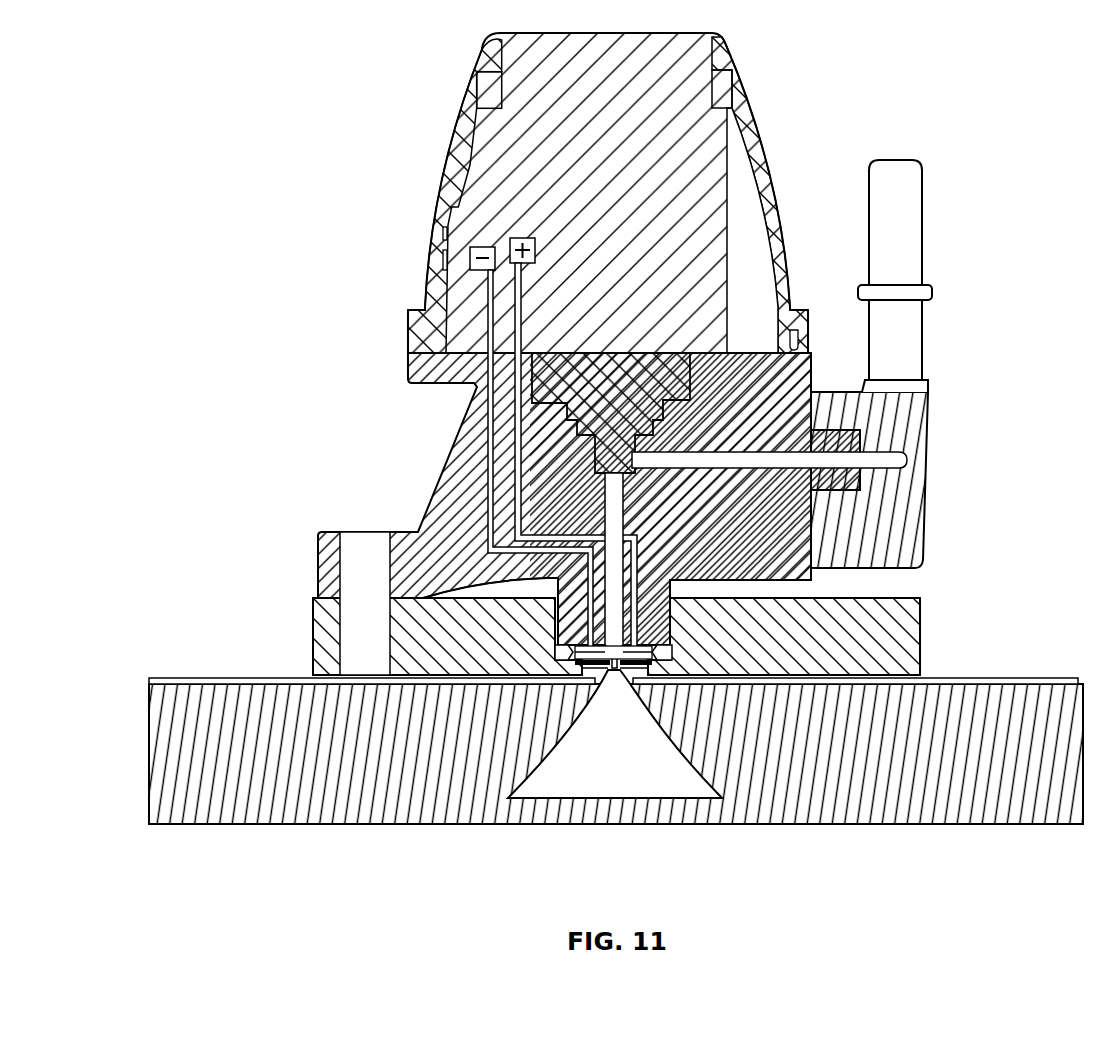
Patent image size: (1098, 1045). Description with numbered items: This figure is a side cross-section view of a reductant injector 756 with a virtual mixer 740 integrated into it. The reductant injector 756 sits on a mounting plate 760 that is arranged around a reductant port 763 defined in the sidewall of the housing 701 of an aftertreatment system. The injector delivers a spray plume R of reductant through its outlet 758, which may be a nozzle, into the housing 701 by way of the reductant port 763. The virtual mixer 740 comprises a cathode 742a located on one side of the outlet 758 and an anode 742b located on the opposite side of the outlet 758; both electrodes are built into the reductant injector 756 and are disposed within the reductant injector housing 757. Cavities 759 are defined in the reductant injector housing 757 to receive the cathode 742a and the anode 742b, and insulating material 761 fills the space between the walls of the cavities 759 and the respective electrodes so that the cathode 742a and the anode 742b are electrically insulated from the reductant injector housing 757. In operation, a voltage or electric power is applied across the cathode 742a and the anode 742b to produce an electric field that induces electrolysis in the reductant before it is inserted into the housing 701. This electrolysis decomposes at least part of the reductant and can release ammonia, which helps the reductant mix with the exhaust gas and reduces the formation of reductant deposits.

The reductant injector 756 is at (728, 63).
The reductant injector housing 757 is at (473, 464).
The virtual mixer 740 is at (487, 532).
The cathode 742a is at (600, 650).
The anode 742b is at (665, 660).
The insulating material 761 is at (655, 648).
The cavities 759 is at (640, 657).
The mounting plate 760 is at (800, 650).
The housing 701 is at (1018, 683).
The reductant port 763 is at (600, 664).
The outlet 758 is at (640, 668).
The spray plume R is at (630, 762).